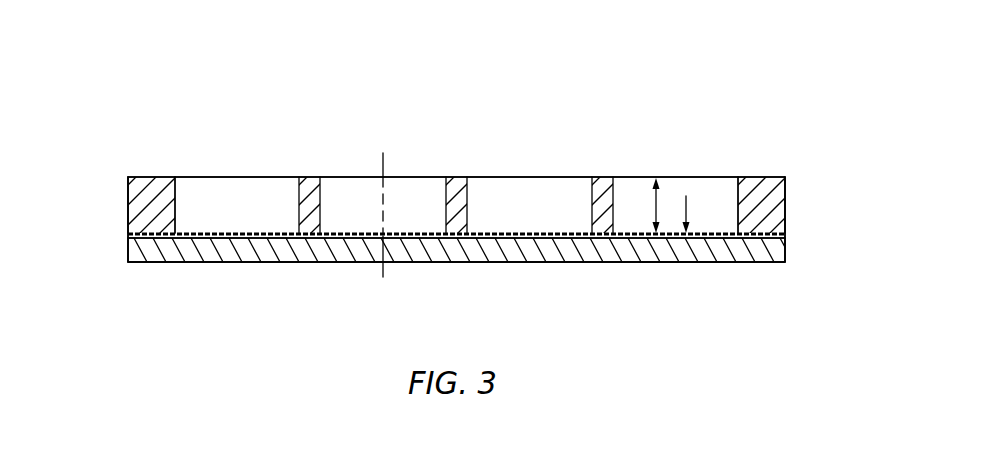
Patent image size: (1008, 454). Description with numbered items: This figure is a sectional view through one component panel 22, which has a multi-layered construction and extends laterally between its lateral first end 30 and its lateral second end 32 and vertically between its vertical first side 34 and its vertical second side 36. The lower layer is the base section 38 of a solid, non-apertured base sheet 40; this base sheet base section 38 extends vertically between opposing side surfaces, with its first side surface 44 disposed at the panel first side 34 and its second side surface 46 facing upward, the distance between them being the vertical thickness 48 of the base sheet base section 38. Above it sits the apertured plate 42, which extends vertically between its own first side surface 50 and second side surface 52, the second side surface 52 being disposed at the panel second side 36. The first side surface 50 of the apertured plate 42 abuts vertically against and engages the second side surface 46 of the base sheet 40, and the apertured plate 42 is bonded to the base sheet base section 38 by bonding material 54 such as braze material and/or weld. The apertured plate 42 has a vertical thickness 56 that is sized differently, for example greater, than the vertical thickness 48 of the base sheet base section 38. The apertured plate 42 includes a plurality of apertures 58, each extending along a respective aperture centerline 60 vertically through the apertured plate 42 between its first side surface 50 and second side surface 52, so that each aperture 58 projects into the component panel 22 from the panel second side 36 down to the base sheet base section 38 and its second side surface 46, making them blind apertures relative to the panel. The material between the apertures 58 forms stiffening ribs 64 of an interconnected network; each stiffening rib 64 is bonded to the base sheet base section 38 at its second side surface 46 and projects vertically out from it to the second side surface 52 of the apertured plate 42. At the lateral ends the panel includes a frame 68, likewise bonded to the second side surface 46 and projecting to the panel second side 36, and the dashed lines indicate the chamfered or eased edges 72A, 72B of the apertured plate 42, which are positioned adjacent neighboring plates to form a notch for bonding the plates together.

The component panel 22 is at (744, 98).
The lateral first end 30 is at (128, 222).
The lateral second end 32 is at (785, 226).
The vertical first side 34 is at (454, 287).
The vertical second side 36 is at (310, 177).
The base section 38 is at (400, 276).
The base sheet 40 is at (369, 297).
The apertured plate 42 is at (455, 168).
The first side surface 44 is at (221, 263).
The second side surface 46 is at (206, 232).
The vertical thickness 48 is at (686, 272).
The first side surface 50 is at (518, 243).
The second side surface 52 is at (541, 177).
The bonding material 54 is at (128, 236).
The vertical thickness 56 is at (658, 205).
The apertures 58 is at (238, 198).
The aperture centerline 60 is at (383, 156).
The stiffening ribs 64 is at (333, 180).
The frame 68 is at (142, 157).
The chamfered edge 72A is at (142, 186).
The chamfered edge 72B is at (772, 200).